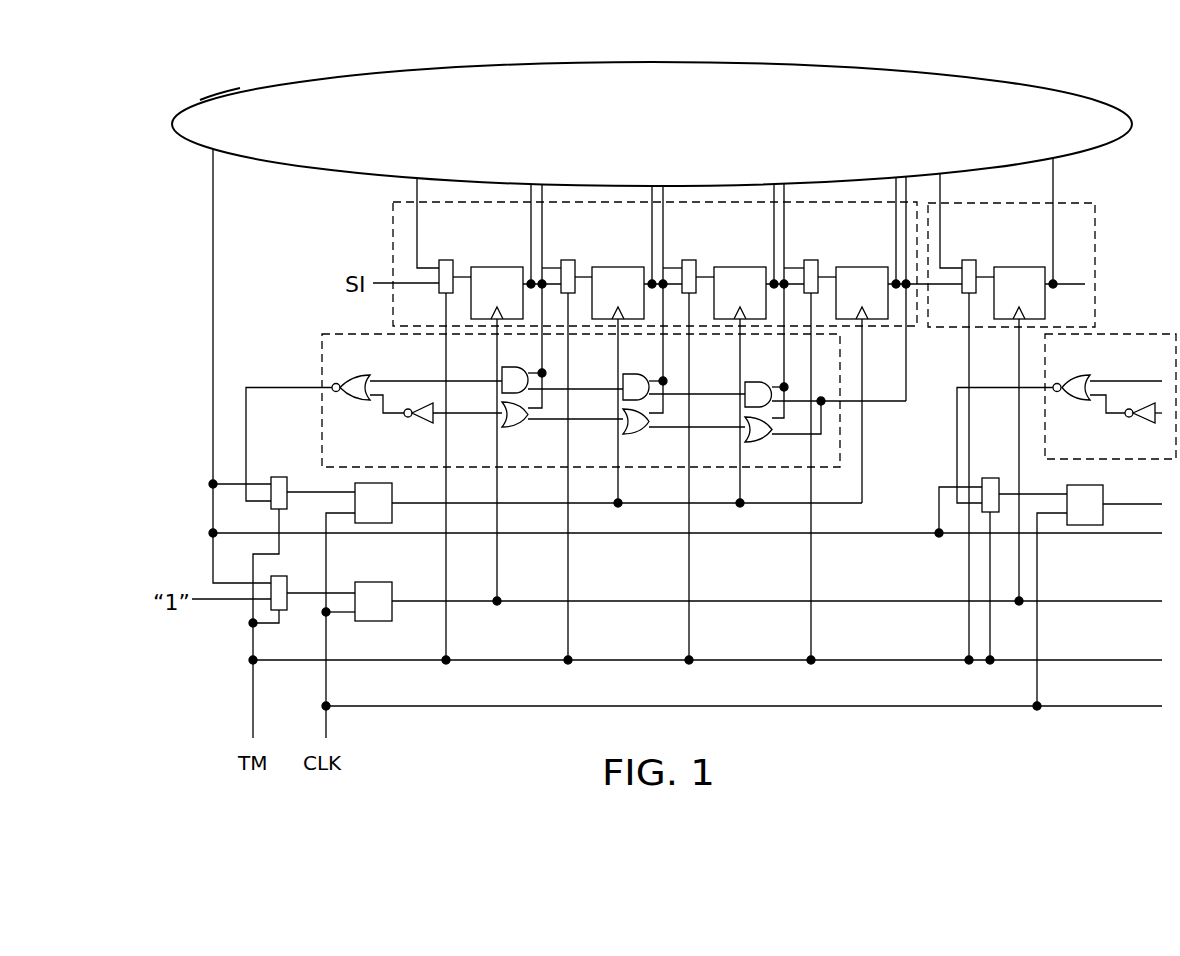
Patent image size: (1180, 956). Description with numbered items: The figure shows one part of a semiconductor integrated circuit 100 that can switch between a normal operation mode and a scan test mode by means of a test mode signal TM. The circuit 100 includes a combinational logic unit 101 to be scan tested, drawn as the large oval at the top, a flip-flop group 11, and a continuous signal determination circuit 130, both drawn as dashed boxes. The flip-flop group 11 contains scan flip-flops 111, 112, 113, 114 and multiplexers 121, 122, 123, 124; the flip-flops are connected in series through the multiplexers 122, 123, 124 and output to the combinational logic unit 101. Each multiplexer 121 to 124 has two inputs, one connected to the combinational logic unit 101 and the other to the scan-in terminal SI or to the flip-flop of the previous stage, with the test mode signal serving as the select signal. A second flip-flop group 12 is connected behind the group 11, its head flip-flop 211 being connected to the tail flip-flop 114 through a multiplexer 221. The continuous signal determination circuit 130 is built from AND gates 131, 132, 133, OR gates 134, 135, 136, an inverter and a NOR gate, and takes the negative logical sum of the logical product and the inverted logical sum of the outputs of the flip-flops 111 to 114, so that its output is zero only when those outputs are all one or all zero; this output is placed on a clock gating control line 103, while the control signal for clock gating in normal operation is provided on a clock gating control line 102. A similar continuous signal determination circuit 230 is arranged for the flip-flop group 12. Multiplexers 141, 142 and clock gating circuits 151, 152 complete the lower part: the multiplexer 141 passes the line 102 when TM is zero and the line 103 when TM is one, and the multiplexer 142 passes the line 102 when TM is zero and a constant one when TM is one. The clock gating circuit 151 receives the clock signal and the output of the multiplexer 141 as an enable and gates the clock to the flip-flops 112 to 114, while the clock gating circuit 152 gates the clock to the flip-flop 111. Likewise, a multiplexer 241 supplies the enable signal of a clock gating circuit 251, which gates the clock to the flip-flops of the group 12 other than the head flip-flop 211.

The semiconductor integrated circuit 100 is at (685, 43).
The combinational logic unit 101 is at (227, 93).
The clock gating control line 102 is at (213, 248).
The clock gating control line 103 is at (273, 387).
The flip-flop group 11 is at (393, 238).
The flip-flop group 12 is at (1068, 203).
The flip-flop 111 is at (497, 267).
The flip-flop 112 is at (618, 267).
The flip-flop 113 is at (740, 267).
The flip-flop 114 is at (862, 267).
The multiplexer 121 is at (446, 260).
The multiplexer 122 is at (568, 260).
The multiplexer 123 is at (689, 260).
The multiplexer 124 is at (811, 260).
The continuous signal determination circuit 130 is at (322, 333).
The AND gate 131 is at (520, 367).
The AND gate 132 is at (640, 374).
The AND gate 133 is at (760, 382).
The OR gate 134 is at (512, 427).
The OR gate 135 is at (634, 434).
The OR gate 136 is at (762, 442).
The multiplexer 141 is at (279, 477).
The multiplexer 142 is at (303, 558).
The clock gating circuit 151 is at (392, 488).
The clock gating circuit 152 is at (375, 582).
The flip-flop 211 is at (1019, 267).
The multiplexer 221 is at (969, 260).
The continuous signal determination circuit 230 is at (1142, 334).
The multiplexer 241 is at (990, 478).
The clock gating circuit 251 is at (1103, 491).